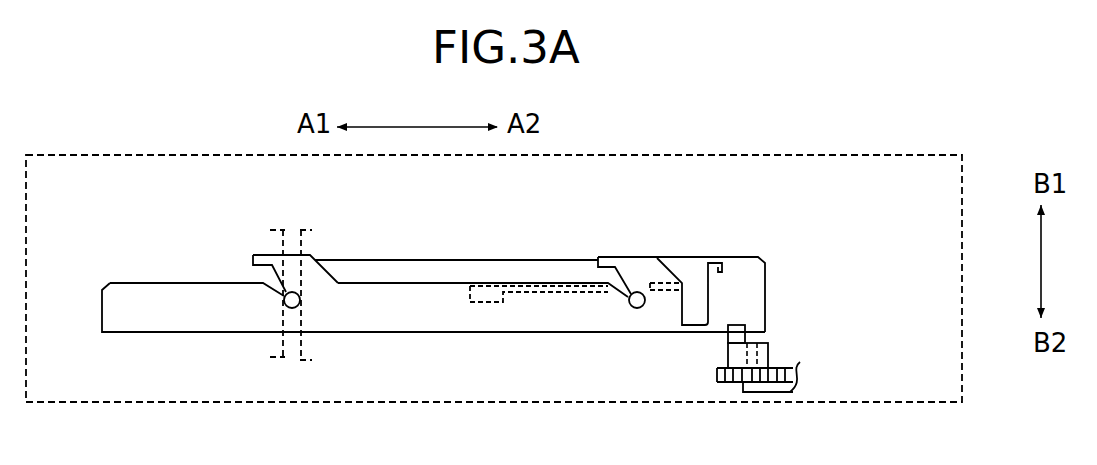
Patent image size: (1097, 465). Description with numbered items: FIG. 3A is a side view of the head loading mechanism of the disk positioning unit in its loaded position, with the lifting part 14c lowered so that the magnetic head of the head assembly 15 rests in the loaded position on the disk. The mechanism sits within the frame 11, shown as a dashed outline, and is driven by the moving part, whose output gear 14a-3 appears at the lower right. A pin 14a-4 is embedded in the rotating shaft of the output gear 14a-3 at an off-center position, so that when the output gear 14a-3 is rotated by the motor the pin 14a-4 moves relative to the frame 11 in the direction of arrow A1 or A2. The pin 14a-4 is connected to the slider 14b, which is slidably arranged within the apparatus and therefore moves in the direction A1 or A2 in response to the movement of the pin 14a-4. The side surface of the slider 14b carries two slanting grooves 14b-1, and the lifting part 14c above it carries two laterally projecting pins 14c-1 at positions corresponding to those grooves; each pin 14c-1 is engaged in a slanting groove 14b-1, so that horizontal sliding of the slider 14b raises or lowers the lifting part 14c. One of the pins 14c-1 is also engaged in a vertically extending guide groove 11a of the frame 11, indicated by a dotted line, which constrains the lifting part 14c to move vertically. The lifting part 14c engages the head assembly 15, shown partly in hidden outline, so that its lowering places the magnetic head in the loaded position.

The frame 11 is at (869, 155).
The guide groove 11a is at (328, 222).
The slider 14b is at (383, 323).
The slanting groove 14b-1 is at (266, 288).
The lifting part 14c is at (445, 268).
The laterally projecting pin 14c-1 is at (285, 292).
The head assembly 15 is at (549, 280).
The pin 14a-4 is at (778, 351).
The output gear 14a-3 is at (730, 383).